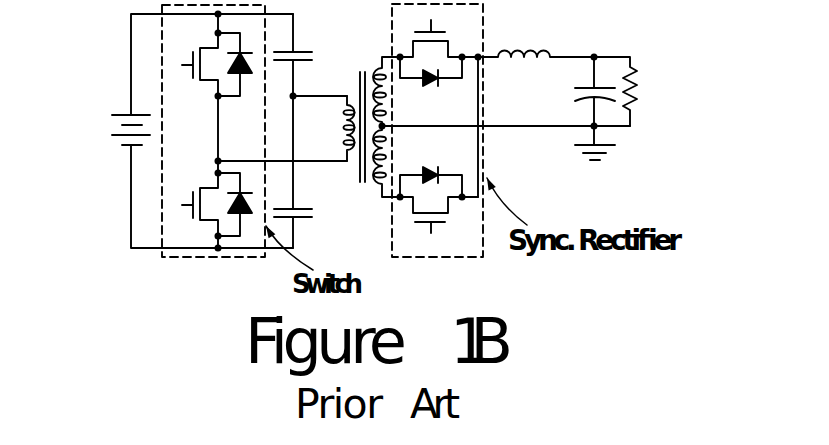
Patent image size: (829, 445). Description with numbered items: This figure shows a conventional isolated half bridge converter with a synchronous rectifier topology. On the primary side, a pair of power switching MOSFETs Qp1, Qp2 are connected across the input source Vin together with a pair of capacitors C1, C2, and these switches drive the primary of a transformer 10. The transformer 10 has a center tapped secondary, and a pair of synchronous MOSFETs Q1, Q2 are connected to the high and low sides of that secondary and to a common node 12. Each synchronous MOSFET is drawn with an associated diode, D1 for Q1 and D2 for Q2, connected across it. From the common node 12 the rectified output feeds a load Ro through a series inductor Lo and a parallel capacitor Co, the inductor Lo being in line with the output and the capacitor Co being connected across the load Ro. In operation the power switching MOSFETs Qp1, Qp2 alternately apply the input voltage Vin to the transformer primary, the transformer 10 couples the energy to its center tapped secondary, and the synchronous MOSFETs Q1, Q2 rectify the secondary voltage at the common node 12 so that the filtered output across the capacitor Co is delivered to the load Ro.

The transformer 10 is at (352, 88).
The common node 12 is at (483, 60).
The input voltage source Vin is at (120, 115).
The power switching MOSFET Qp1 is at (208, 57).
The power switching MOSFET Qp2 is at (208, 172).
The capacitor 1 C1 is at (297, 55).
The capacitor 2 C2 is at (297, 172).
The synchronous MOSFET Q1 is at (439, 35).
The synchronous MOSFET Q2 is at (440, 223).
The body diode 1 D1 is at (431, 87).
The body diode 2 D2 is at (431, 168).
The series inductor Lo is at (536, 40).
The parallel capacitor Co is at (586, 92).
The load Ro is at (633, 91).